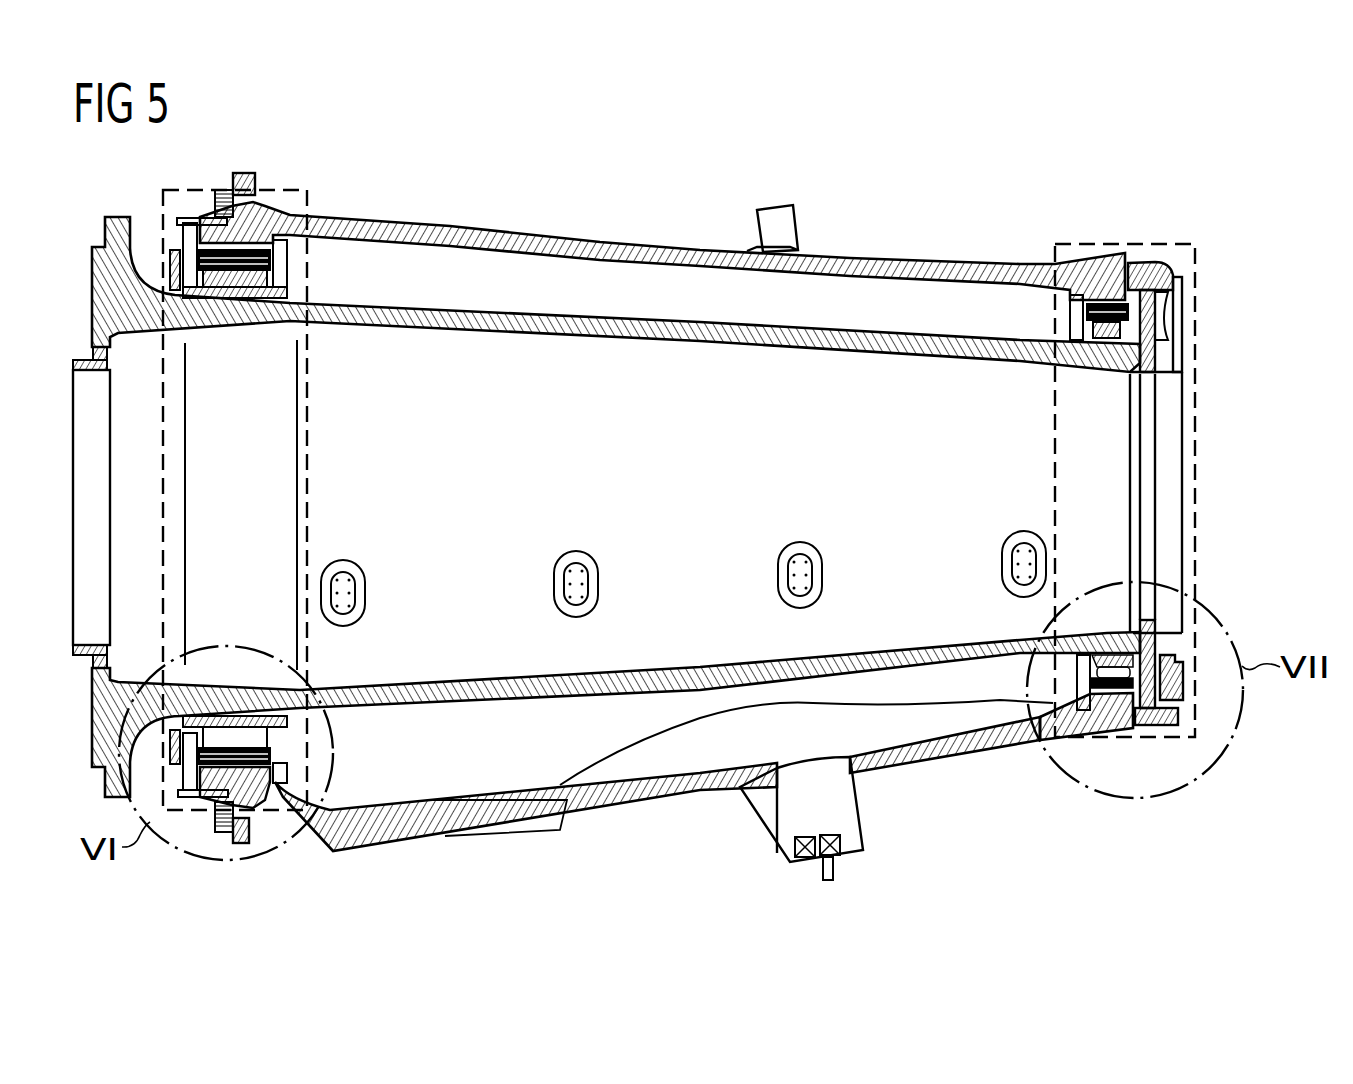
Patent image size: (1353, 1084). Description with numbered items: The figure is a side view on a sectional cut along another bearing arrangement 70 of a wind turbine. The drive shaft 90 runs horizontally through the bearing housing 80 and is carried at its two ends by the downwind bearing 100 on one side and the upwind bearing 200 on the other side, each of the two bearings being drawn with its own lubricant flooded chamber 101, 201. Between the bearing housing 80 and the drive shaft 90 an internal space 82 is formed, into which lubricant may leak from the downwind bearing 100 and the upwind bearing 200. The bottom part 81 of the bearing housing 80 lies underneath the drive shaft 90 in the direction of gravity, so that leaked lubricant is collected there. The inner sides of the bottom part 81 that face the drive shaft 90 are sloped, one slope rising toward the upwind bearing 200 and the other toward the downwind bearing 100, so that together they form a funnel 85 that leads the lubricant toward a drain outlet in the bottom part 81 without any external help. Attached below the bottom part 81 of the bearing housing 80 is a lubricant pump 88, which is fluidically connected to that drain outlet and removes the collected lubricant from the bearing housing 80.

The bearing arrangement 70 is at (845, 218).
The bearing housing 80 is at (716, 248).
The bottom part 81 is at (610, 800).
The internal space 82 is at (893, 730).
The funnel 85 is at (983, 747).
The lubricant pump 88 is at (786, 820).
The drive shaft 90 is at (589, 340).
The downwind bearing 100 is at (1196, 493).
The lubricant flooded chamber 101 is at (1126, 493).
The upwind bearing 200 is at (208, 547).
The lubricant flooded chamber 201 is at (190, 826).